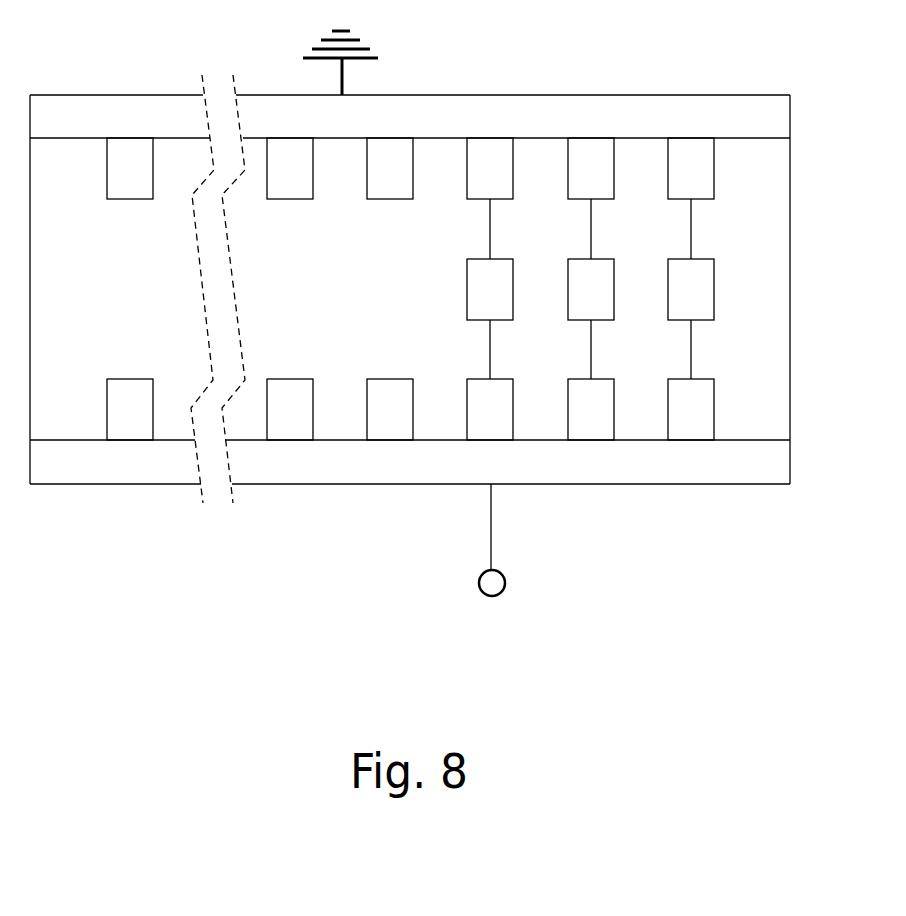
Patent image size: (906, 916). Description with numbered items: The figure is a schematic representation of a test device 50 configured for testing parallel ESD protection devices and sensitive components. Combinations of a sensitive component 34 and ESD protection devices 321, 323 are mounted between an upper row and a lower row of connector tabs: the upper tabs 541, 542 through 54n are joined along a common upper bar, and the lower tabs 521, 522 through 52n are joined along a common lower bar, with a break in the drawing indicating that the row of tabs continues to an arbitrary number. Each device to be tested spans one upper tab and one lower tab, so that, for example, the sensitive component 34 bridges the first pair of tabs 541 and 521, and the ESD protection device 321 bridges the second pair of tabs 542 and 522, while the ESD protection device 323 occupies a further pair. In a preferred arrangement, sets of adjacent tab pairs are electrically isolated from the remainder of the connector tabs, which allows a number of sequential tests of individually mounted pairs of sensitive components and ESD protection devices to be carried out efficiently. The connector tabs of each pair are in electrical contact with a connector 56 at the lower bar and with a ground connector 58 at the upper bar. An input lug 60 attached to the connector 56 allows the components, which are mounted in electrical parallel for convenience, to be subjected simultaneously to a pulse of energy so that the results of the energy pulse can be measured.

The device 50 is at (339, 408).
The connector 56 is at (395, 463).
The ground connector 58 is at (418, 120).
The input lug 60 is at (496, 588).
The connector tab 54n is at (134, 181).
The connector tab 52n is at (142, 393).
The connector tab 542 is at (594, 160).
The connector tab 541 is at (692, 160).
The ESD protection device 323 is at (487, 282).
The ESD protection device 321 is at (580, 276).
The sensitive component 34 is at (682, 270).
The connector tab 522 is at (589, 422).
The connector tab 521 is at (698, 418).